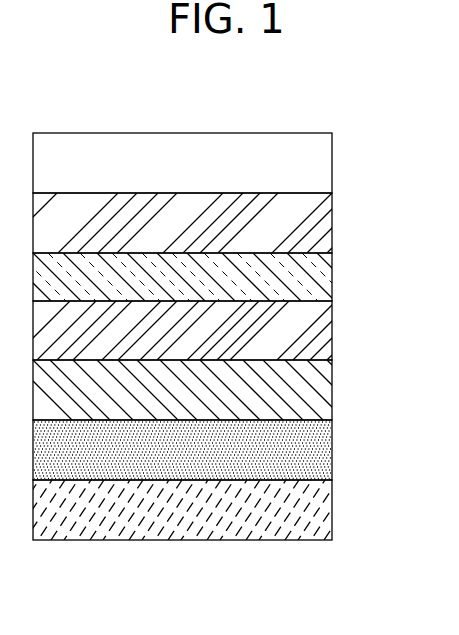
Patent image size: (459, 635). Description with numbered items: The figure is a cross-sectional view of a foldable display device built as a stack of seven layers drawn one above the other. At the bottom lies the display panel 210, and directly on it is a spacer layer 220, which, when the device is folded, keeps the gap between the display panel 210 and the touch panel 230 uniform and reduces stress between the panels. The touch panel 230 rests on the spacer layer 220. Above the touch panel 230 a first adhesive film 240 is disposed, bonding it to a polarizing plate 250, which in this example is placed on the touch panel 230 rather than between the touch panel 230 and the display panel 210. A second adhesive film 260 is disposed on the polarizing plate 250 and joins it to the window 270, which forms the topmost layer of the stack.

The display panel 210 is at (320, 509).
The spacer layer 220 is at (320, 449).
The touch panel 230 is at (320, 391).
The first adhesive film 240 is at (320, 331).
The polarizing plate 250 is at (320, 277).
The second adhesive film 260 is at (320, 222).
The window 270 is at (320, 164).